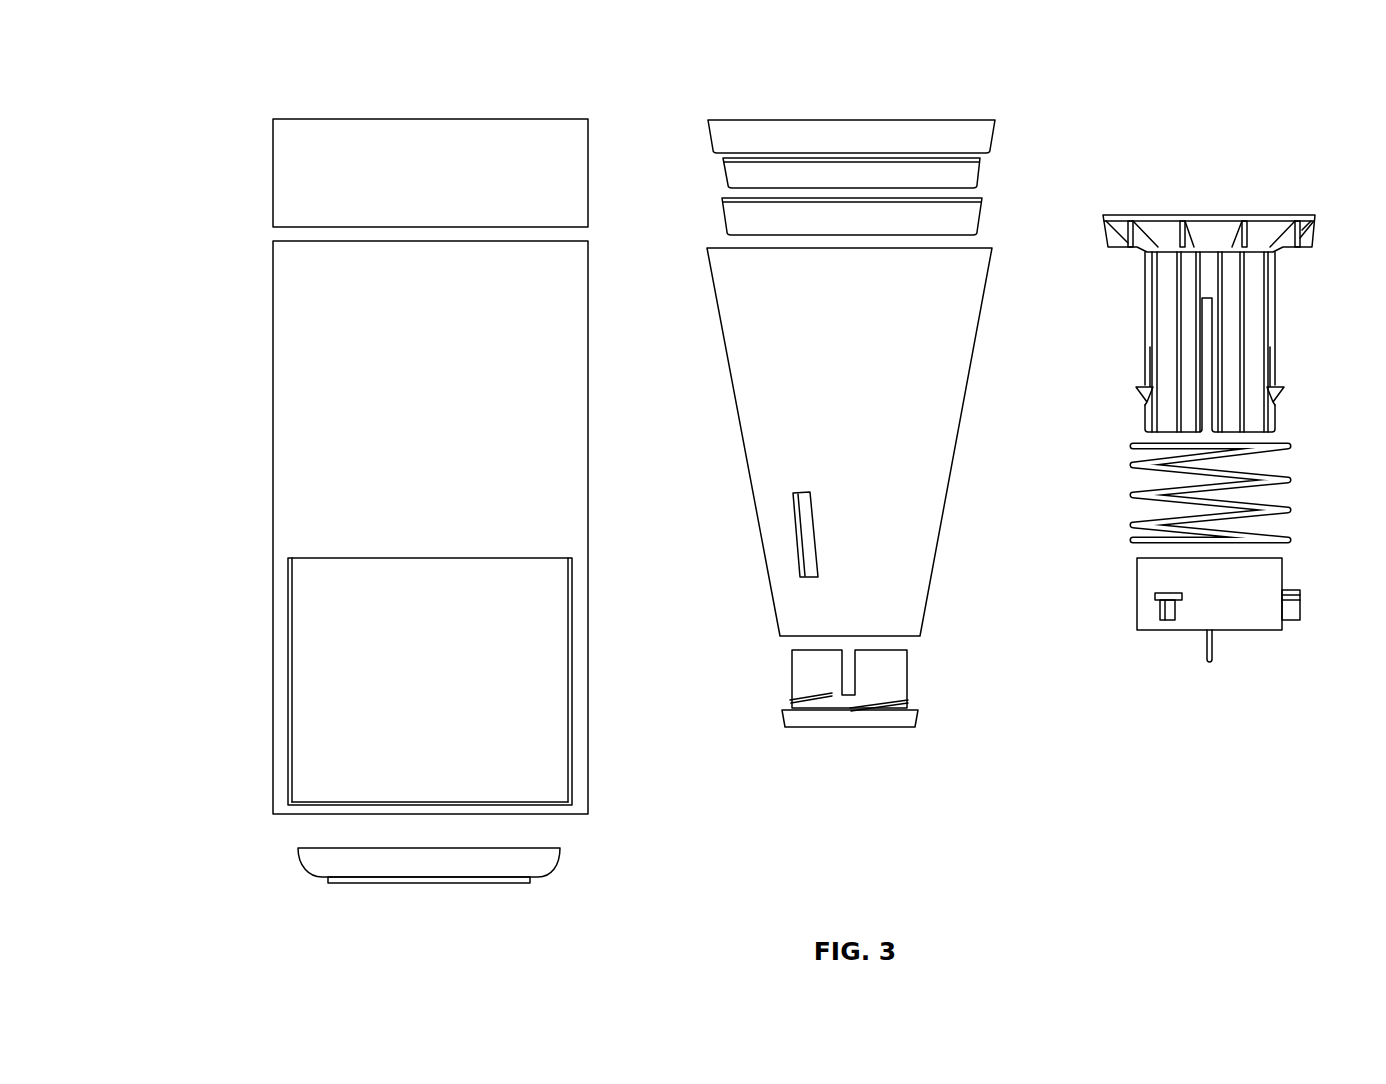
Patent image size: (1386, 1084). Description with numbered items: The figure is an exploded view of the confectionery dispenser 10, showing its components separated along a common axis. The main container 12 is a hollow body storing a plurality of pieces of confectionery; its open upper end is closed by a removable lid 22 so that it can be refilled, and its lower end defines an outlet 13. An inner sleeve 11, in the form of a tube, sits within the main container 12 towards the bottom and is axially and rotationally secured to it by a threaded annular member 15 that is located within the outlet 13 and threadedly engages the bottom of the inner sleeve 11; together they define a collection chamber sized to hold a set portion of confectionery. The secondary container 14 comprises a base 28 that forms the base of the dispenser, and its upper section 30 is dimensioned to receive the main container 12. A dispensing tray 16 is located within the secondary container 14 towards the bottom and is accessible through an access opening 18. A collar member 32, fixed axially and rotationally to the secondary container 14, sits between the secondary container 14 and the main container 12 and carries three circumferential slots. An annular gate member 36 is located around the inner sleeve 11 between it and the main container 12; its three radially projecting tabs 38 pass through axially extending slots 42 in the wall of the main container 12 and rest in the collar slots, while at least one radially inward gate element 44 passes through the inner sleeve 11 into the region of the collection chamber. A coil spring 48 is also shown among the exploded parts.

The dispenser 10 is at (248, 76).
The inner sleeve 11 is at (1253, 281).
The main container 12 is at (948, 430).
The outlet 13 is at (888, 641).
The secondary container 14 is at (262, 392).
The annular member 15 is at (918, 713).
The dispensing tray 16 is at (520, 863).
The access opening 18 is at (572, 682).
The lid 22 is at (875, 135).
The base 28 is at (425, 883).
The upper section 30 is at (590, 378).
The collar member 32 is at (297, 168).
The gate member 36 is at (1240, 615).
The tabs 38 is at (1292, 612).
The slots 42 is at (805, 543).
The gate element 44 is at (1205, 652).
The spring 48 is at (1290, 450).